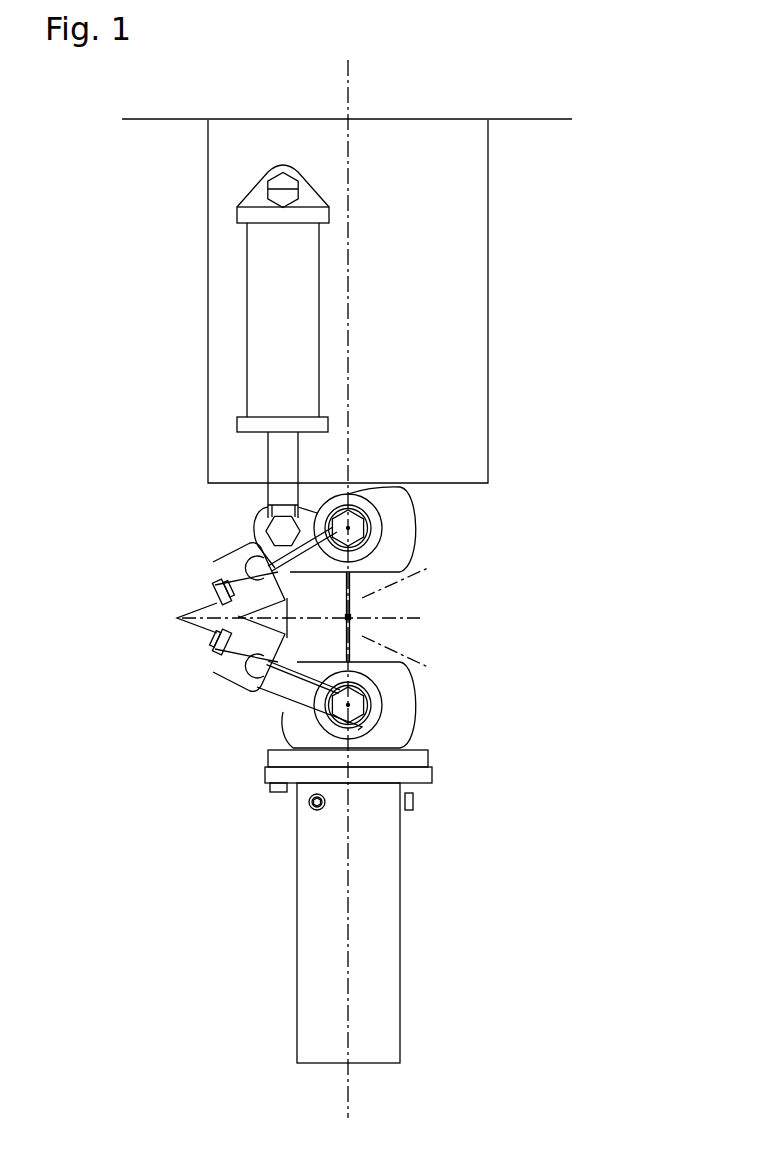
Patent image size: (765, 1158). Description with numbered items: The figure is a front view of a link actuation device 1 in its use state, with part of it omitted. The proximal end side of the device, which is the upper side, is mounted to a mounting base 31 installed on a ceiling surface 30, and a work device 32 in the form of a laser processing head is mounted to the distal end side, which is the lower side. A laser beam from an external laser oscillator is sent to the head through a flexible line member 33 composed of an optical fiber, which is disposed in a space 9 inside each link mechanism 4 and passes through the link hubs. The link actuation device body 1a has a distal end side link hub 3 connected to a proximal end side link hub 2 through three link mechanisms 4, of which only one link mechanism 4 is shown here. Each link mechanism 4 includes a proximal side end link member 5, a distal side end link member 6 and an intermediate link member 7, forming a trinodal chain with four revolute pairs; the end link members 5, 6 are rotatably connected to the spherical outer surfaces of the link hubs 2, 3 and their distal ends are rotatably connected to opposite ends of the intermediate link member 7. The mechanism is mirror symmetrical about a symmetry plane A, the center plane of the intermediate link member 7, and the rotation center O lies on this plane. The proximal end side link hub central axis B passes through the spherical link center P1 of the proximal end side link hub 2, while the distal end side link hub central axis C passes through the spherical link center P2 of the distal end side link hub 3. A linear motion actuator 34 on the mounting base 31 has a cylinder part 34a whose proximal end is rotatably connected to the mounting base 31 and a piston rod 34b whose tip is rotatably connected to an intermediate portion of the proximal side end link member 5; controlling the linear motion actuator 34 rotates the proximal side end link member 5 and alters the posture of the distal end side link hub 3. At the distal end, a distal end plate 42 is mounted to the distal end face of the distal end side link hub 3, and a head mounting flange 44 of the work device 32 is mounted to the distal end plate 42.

The link actuation device 1 is at (151, 478).
The link actuation device body 1a is at (209, 692).
The proximal end side link hub 2 is at (406, 526).
The distal end side link hub 3 is at (402, 707).
The link mechanism 4 is at (188, 646).
The proximal side end link member 5 is at (256, 523).
The distal side end link member 6 is at (260, 693).
The intermediate link member 7 is at (213, 563).
The space 9 is at (236, 607).
The ceiling surface 30 is at (532, 120).
The mounting base 31 is at (488, 311).
The work device 32 is at (297, 940).
The line member 33 is at (381, 617).
The linear motion actuator 34 is at (188, 341).
The cylinder part 34a is at (247, 343).
The piston rod 34b is at (270, 455).
The distal end plate 42 is at (268, 754).
The head mounting flange 44 is at (265, 776).
The spherical link center P1 is at (382, 532).
The spherical link center P2 is at (382, 708).
The rotation center O is at (353, 603).
The symmetry plane A is at (387, 617).
The proximal end side link hub central axis B is at (404, 573).
The distal end side link hub central axis C is at (404, 657).